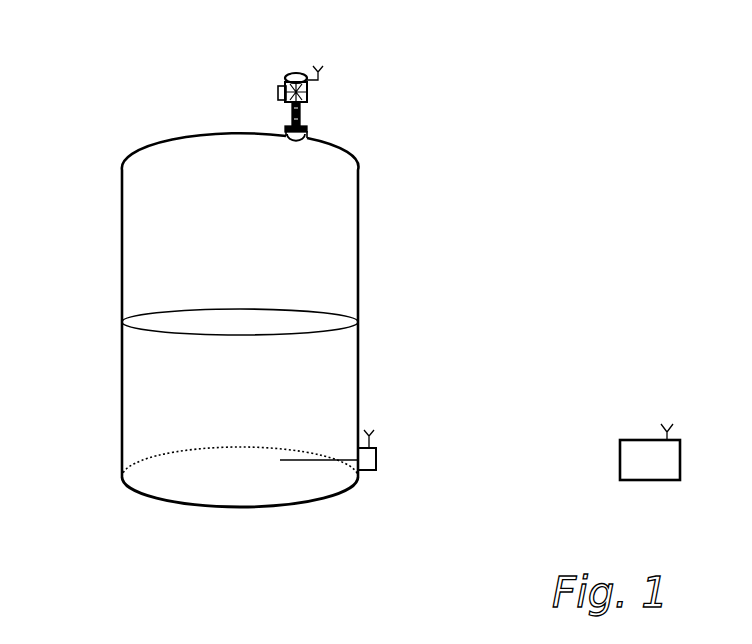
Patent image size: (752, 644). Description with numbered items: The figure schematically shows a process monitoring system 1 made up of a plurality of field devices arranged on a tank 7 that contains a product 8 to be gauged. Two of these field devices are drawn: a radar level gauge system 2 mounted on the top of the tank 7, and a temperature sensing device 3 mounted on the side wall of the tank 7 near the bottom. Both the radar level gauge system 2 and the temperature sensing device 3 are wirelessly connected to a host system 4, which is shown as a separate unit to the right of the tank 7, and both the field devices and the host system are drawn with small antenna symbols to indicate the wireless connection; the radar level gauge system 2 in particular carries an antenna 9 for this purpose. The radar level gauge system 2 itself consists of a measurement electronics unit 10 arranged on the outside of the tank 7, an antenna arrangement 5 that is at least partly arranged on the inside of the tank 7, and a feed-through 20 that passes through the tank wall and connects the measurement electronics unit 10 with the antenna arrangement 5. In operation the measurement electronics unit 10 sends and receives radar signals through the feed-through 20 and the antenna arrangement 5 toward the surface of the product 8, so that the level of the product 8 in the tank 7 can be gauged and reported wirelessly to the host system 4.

The process monitoring system 1 is at (560, 193).
The radar level gauge system 2 is at (262, 109).
The temperature sensing device 3 is at (390, 412).
The host system 4 is at (647, 440).
The antenna arrangement 5 is at (303, 156).
The tank 7 is at (122, 262).
The product 8 is at (247, 432).
The antenna 9 is at (320, 70).
The measurement electronics unit 10 is at (295, 73).
The feed-through 20 is at (320, 116).